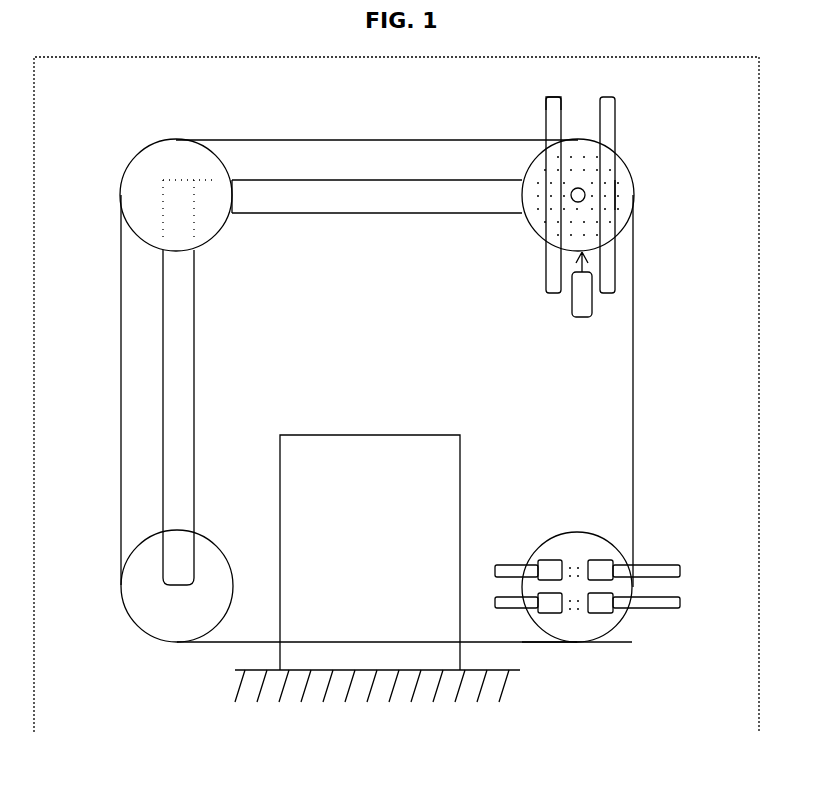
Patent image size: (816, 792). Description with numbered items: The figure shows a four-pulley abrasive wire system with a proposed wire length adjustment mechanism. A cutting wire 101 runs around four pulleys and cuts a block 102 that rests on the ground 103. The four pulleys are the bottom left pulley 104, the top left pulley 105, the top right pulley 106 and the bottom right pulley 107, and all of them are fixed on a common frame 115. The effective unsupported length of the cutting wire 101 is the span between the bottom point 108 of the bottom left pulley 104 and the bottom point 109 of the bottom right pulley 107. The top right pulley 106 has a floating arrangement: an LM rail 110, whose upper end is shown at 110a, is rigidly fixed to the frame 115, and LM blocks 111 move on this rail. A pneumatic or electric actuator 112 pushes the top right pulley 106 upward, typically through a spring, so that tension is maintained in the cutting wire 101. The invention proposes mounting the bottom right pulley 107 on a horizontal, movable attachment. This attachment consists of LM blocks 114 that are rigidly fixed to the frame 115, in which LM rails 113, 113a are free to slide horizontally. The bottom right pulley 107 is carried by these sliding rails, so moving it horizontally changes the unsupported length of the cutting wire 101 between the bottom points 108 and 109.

The cutting wire 101 is at (233, 643).
The block 102 is at (312, 432).
The ground 103 is at (455, 688).
The bottom left pulley 104 is at (147, 602).
The top left pulley 105 is at (215, 235).
The top right pulley 106 is at (530, 223).
The bottom right pulley 107 is at (552, 545).
The bottom point of bottom left pulley 108 is at (172, 642).
The bottom point of bottom right pulley 109 is at (590, 642).
The LM rail 110 is at (617, 132).
The rail end 110a is at (562, 103).
The LM blocks 111 is at (632, 198).
The actuator 112 is at (592, 299).
The LM rail 113 is at (635, 562).
The LM rail 113a is at (634, 612).
The LM blocks 114 is at (605, 543).
The frame 115 is at (163, 362).